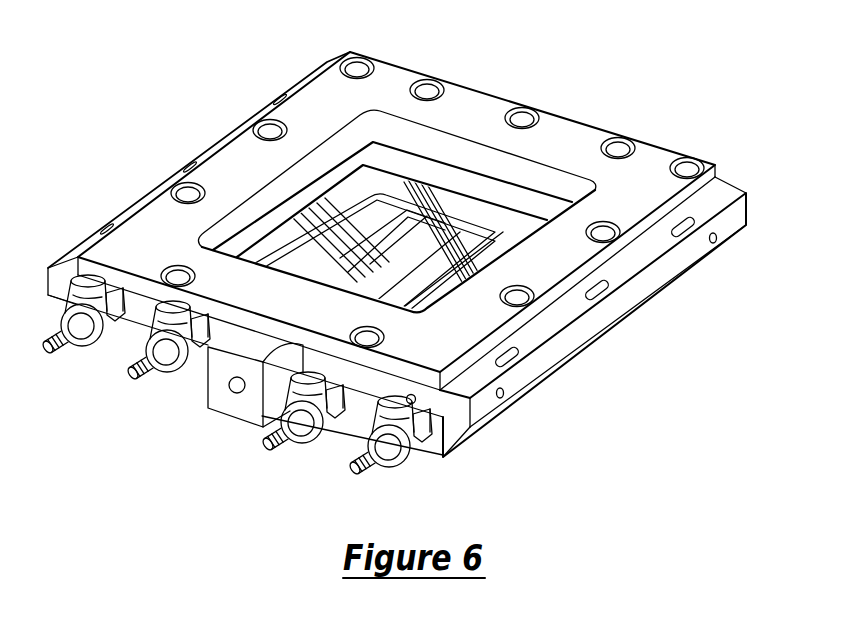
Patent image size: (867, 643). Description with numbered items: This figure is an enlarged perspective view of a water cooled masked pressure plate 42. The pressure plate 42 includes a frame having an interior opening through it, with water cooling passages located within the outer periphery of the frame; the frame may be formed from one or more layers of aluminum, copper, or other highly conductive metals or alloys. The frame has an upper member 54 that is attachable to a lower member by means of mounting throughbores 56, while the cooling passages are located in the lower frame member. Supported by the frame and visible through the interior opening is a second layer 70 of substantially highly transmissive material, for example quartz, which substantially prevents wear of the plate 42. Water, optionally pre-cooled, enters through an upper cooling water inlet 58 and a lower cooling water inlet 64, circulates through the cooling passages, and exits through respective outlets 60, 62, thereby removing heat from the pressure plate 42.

The water cooled pressure plate 42 is at (199, 124).
The upper member 54 is at (473, 112).
The mounting throughbores 56 is at (618, 148).
The upper cooling water inlet 58 is at (73, 345).
The outlet 60 is at (157, 373).
The outlet 62 is at (278, 448).
The lower cooling water inlet 64 is at (360, 473).
The second layer 70 is at (497, 253).